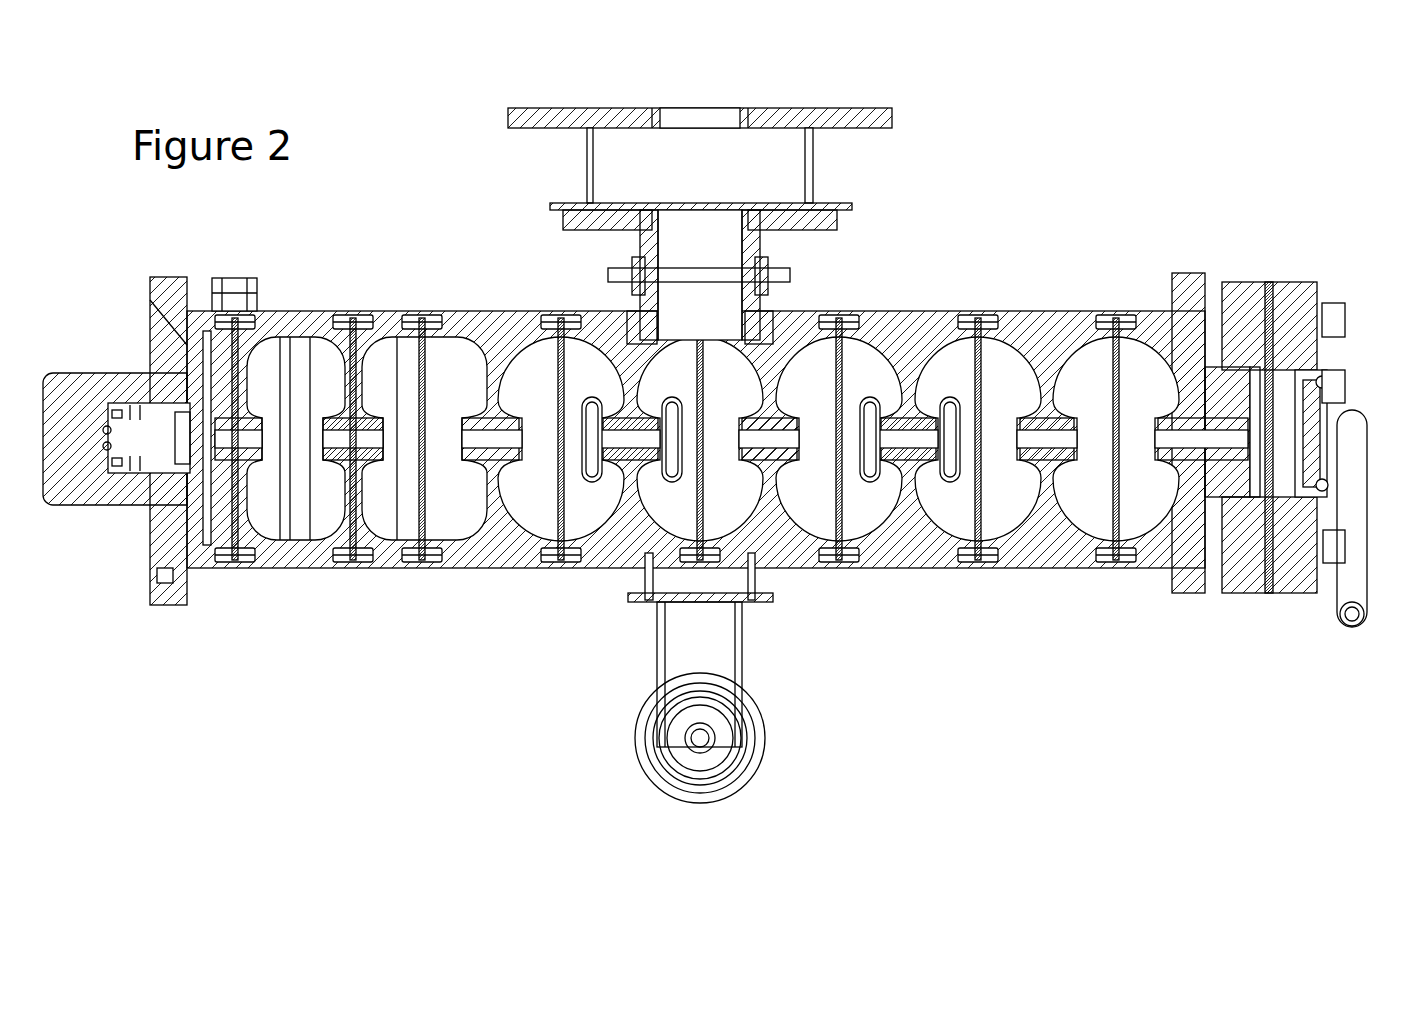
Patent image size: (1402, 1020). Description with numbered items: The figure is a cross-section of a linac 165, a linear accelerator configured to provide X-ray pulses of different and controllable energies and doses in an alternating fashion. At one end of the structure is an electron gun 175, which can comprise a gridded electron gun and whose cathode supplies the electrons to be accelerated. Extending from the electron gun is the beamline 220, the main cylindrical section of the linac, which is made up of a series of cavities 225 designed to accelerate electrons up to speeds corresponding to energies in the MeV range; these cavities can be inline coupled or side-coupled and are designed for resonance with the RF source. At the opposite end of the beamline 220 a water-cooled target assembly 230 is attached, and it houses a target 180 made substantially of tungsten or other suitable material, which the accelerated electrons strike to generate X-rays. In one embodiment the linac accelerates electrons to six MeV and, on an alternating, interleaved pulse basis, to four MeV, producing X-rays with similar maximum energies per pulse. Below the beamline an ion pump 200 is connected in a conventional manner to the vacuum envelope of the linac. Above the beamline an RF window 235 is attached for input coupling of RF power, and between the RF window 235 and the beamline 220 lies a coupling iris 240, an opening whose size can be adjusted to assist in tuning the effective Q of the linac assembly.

The linac 165 is at (705, 455).
The electron gun 175 is at (120, 378).
The target 180 is at (1276, 455).
The ion pump 200 is at (658, 677).
The beamline 220 is at (487, 325).
The cavities 225 is at (677, 500).
The water-cooled target assembly 230 is at (1287, 284).
The RF window 235 is at (570, 161).
The coupling iris 240 is at (700, 335).